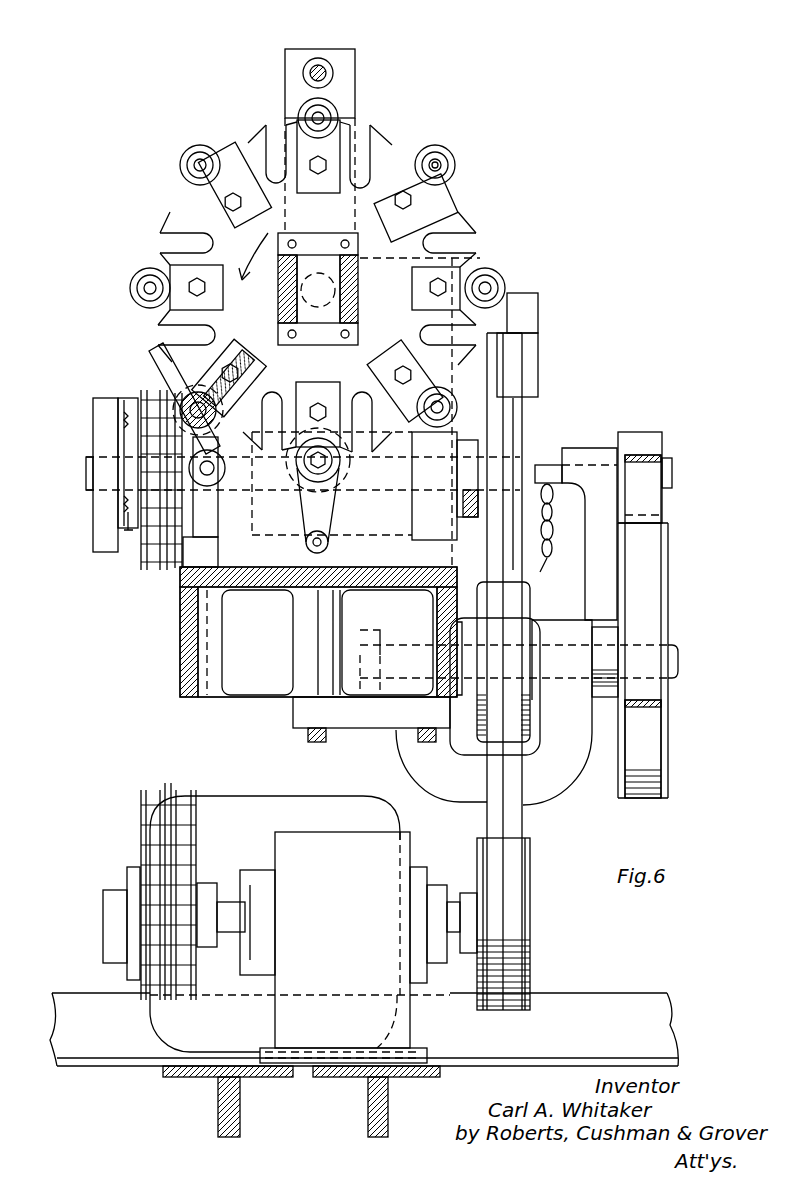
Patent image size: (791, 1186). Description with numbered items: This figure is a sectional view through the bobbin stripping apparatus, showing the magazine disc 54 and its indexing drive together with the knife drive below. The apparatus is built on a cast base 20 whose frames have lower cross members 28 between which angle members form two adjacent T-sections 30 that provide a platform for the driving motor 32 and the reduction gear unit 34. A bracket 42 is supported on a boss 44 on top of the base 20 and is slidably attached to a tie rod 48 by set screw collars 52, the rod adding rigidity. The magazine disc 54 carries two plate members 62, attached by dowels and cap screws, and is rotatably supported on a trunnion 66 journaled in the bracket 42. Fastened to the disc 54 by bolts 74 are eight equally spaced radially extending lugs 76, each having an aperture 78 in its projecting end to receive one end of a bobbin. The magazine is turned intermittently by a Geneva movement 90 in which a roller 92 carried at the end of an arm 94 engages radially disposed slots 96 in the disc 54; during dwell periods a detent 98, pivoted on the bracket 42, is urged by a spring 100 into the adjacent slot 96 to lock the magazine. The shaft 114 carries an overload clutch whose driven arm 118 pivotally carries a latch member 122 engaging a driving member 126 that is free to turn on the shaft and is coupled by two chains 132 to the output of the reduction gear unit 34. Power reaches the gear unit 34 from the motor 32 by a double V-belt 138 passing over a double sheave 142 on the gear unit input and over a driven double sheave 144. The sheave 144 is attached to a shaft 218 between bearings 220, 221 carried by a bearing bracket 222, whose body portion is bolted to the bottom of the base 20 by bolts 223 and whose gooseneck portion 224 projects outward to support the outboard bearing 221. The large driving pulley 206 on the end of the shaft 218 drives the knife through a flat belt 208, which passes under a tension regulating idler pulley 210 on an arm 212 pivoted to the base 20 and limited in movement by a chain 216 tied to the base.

The cast base 20 is at (180, 640).
The cross members 28 is at (65, 1045).
The T-sections 30 is at (218, 1104).
The driving motor 32 is at (245, 790).
The reduction gear unit 34 is at (290, 940).
The bracket 42 is at (345, 62).
The boss 44 is at (172, 570).
The tie rod 48 is at (319, 64).
The set screw collars 52 is at (303, 73).
The disc 54 is at (168, 210).
The plate members 62 is at (358, 292).
The trunnion 66 is at (279, 312).
The bolts 74 is at (328, 162).
The lugs 76 is at (299, 110).
The aperture 78 is at (196, 166).
The Geneva movement 90 is at (362, 530).
The roller 92 is at (306, 545).
The arm 94 is at (300, 532).
The slots 96 is at (468, 235).
The detent 98 is at (160, 360).
The spring 100 is at (215, 378).
The shaft 114 is at (88, 473).
The driven arm 118 is at (102, 432).
The latch member 122 is at (118, 402).
The driving member 126 is at (128, 506).
The chains 132 is at (140, 845).
The double V-belt 138 is at (526, 826).
The double sheave 142 is at (528, 942).
The driven double sheave 144 is at (522, 748).
The driving pulley 206 is at (663, 620).
The flat belt 208 is at (645, 741).
The idler pulley 210 is at (662, 445).
The arm 212 is at (586, 448).
The chain 216 is at (545, 568).
The shaft 218 is at (683, 663).
The bearing 220 is at (400, 686).
The bearing 221 is at (582, 672).
The bearing bracket 222 is at (405, 765).
The bolts 223 is at (410, 742).
The gooseneck portion 224 is at (540, 800).